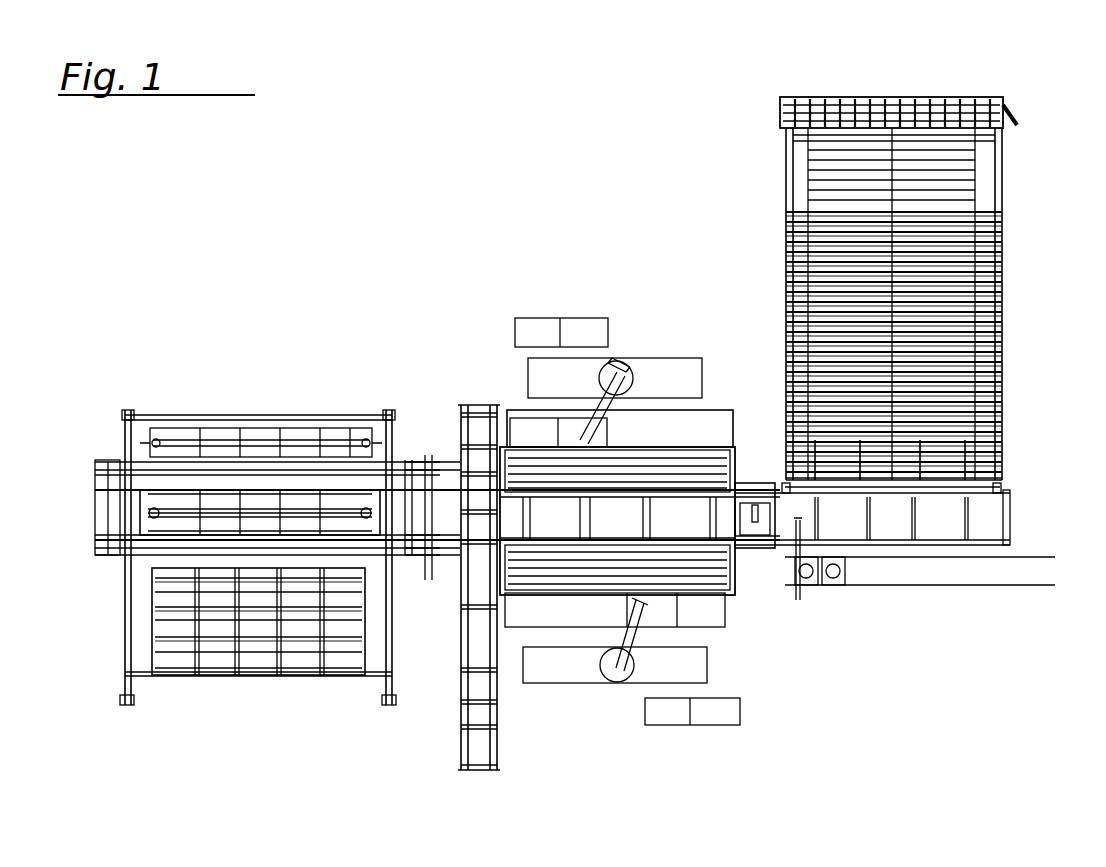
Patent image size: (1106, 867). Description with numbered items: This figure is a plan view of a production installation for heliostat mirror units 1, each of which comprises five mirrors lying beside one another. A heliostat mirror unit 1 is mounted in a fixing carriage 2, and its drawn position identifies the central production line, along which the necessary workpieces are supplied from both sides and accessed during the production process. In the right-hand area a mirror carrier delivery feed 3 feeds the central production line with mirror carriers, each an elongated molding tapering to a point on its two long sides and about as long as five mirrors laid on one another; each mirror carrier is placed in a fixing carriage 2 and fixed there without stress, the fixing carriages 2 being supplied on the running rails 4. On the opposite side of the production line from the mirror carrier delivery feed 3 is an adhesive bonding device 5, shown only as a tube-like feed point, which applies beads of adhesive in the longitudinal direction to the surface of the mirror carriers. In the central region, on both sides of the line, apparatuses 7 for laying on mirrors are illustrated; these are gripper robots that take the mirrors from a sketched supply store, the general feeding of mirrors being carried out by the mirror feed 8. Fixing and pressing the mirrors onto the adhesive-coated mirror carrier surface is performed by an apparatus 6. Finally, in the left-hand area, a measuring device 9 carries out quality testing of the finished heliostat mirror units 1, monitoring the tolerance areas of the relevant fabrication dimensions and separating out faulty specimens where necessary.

The heliostat mirror unit 1 is at (302, 513).
The fixing carriage 2 is at (372, 515).
The mirror carrier delivery feed 3 is at (998, 405).
The running rails 4 is at (990, 545).
The adhesive bonding device 5 is at (833, 585).
The apparatus for fixing and pressing mirrors 6 is at (675, 478).
The apparatuses for laying on mirrors 7 is at (635, 428).
The mirror feed 8 is at (460, 740).
The measuring device 9 is at (205, 553).